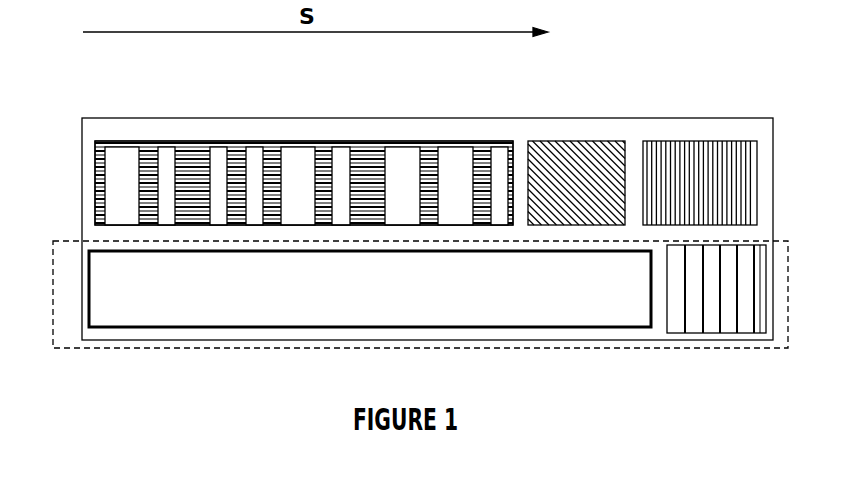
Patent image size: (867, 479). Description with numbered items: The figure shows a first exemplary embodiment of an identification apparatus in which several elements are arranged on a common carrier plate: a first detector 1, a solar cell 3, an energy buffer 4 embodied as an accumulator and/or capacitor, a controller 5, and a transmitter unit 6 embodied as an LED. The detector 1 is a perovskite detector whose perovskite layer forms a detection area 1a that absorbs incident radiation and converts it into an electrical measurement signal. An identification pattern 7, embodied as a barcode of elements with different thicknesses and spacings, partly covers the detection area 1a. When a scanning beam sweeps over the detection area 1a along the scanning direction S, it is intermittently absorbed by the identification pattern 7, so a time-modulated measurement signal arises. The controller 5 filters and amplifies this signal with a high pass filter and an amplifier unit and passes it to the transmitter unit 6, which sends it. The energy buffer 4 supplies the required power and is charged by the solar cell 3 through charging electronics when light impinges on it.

The detector 1 is at (95, 162).
The detection area 1a is at (95, 200).
The solar cell 3 is at (330, 329).
The energy buffer 4 is at (732, 327).
The controller 5 is at (572, 141).
The transmitter unit 6 is at (690, 141).
The identification pattern 7 is at (517, 113).